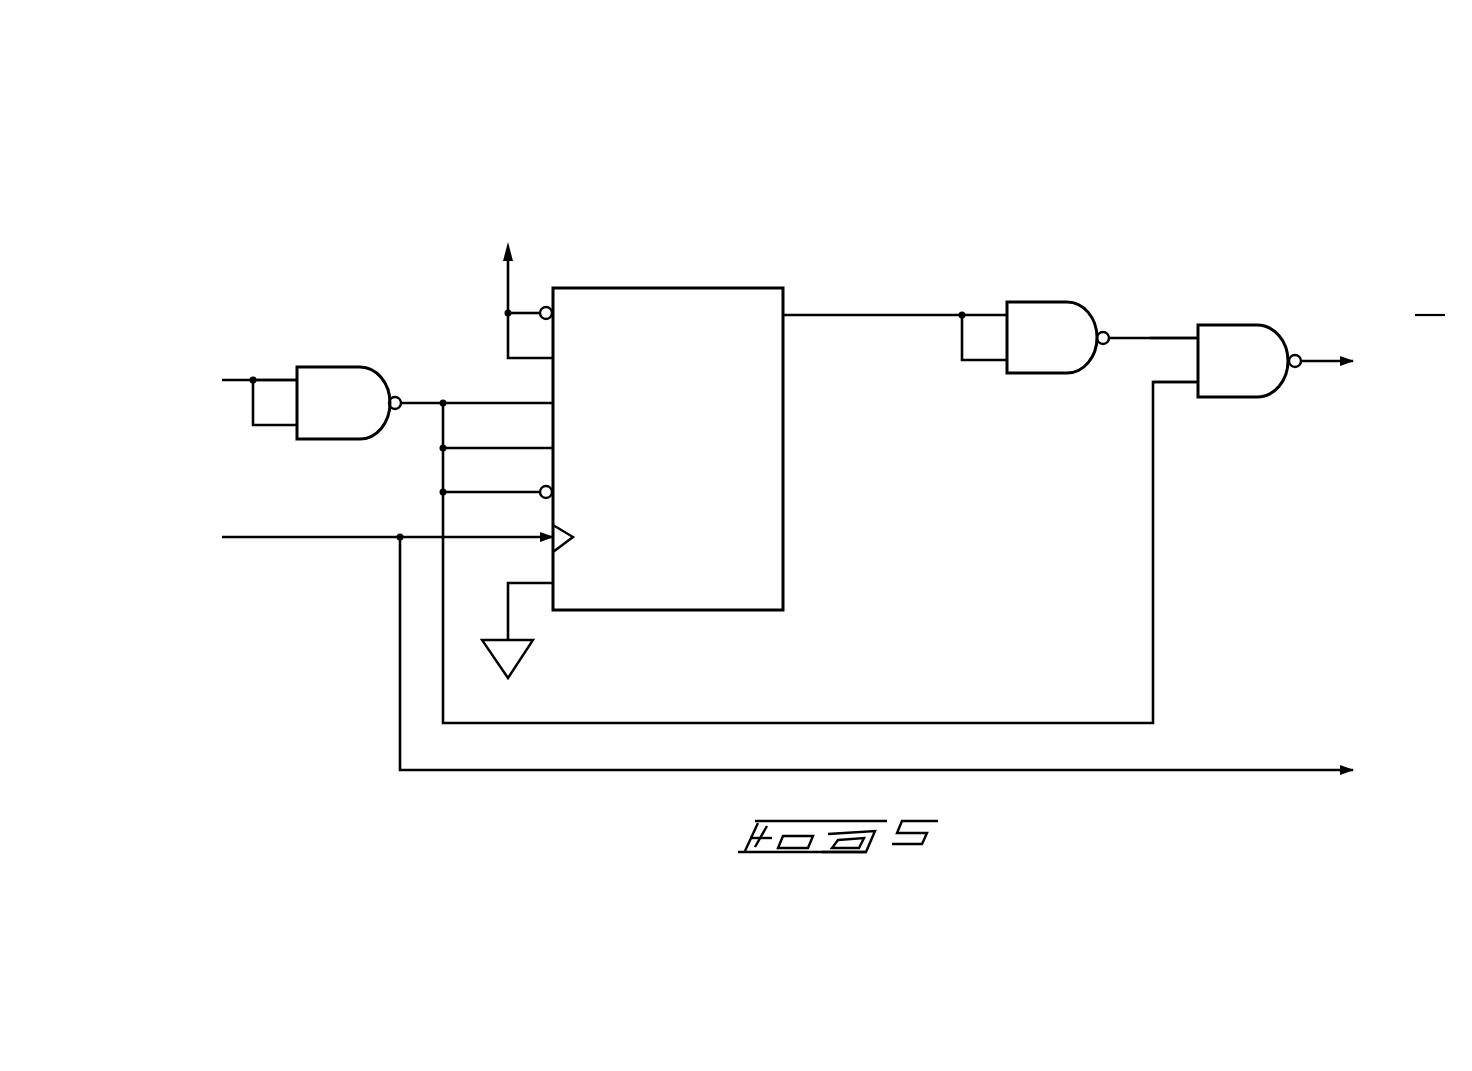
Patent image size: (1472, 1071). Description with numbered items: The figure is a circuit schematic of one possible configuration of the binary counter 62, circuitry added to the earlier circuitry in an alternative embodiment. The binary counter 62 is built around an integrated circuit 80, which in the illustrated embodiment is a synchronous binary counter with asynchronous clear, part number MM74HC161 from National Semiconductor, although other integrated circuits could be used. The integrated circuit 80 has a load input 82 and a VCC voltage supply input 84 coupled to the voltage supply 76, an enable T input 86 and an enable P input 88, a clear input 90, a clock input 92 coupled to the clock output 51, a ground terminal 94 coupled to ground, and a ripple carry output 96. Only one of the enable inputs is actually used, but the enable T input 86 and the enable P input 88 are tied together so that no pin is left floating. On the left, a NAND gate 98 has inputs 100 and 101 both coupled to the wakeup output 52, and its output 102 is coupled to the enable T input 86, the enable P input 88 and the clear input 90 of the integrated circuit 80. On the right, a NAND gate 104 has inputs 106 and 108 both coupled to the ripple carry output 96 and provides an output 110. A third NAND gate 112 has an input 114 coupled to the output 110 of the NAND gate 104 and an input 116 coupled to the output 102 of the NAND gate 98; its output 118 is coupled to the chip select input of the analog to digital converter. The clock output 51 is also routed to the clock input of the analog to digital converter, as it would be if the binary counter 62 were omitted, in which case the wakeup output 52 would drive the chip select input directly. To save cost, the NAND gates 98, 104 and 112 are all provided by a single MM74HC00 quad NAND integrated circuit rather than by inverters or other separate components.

The clock output 51 is at (250, 537).
The wakeup output 52 is at (237, 383).
The binary counter 62 is at (1184, 194).
The voltage supply 76 is at (507, 282).
The integrated circuit 80 is at (783, 512).
The load input 82 is at (527, 310).
The VCC voltage supply input 84 is at (532, 360).
The enable T input 86 is at (530, 407).
The enable P input 88 is at (462, 452).
The clear input 90 is at (525, 498).
The clock input 92 is at (478, 542).
The ground terminal 94 is at (527, 585).
The ripple carry output 96 is at (800, 318).
The NAND gate 98 is at (365, 367).
The input 100 is at (273, 378).
The input 101 is at (272, 427).
The output 102 is at (420, 412).
The NAND gate 104 is at (1082, 302).
The input 106 is at (982, 312).
The input 108 is at (980, 362).
The output 110 is at (1133, 352).
The NAND gate 112 is at (1263, 397).
The input 114 is at (1168, 336).
The input 116 is at (1175, 384).
The output 118 is at (1318, 357).